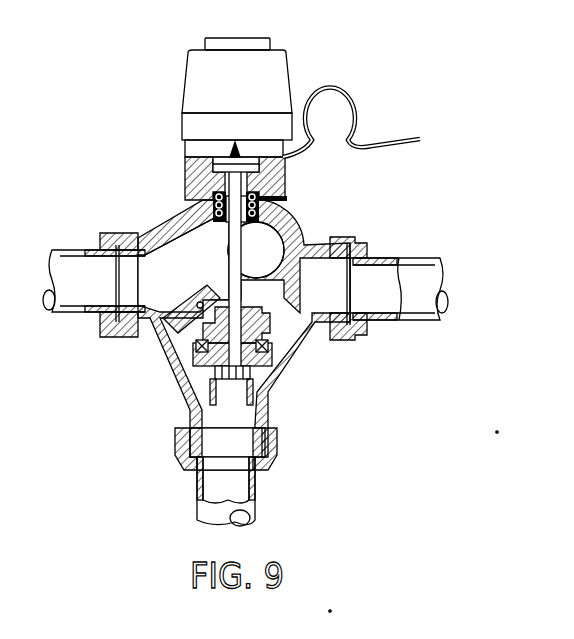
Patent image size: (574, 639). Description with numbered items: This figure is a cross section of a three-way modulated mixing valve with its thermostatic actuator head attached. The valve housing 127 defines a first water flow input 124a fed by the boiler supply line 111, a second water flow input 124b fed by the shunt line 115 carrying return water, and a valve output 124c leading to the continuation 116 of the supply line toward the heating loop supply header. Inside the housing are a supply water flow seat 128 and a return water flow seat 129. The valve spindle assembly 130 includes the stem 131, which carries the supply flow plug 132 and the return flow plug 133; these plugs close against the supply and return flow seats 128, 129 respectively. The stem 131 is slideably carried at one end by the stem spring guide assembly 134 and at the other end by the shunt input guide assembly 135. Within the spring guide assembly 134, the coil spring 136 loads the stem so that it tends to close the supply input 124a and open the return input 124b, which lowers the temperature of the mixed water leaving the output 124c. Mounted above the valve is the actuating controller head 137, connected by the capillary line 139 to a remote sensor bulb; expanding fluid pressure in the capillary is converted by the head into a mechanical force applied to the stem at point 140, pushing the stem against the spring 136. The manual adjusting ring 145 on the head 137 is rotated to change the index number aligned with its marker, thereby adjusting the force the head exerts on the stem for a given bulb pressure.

The boiler supply line 111 is at (68, 250).
The shunt line 115 is at (255, 504).
The continuation of supply line 116 is at (390, 264).
The first water flow input 124a is at (128, 335).
The second water flow input 124b is at (180, 427).
The valve output 124c is at (318, 345).
The housing 127 is at (261, 326).
The supply water flow seat 128 is at (210, 284).
The return water flow seat 129 is at (274, 344).
The valve spindle assembly 130 is at (258, 252).
The stem 131 is at (229, 244).
The supply flow plug 132 is at (190, 308).
The return flow plug 133 is at (190, 350).
The stem spring guide assembly 134 is at (210, 197).
The shunt input guide assembly 135 is at (232, 400).
The coil spring 136 is at (292, 200).
The actuating controller head 137 is at (280, 52).
The capillary line 139 is at (342, 88).
The point of force on stem 140 is at (195, 182).
The manual adjusting ring 145 is at (182, 130).